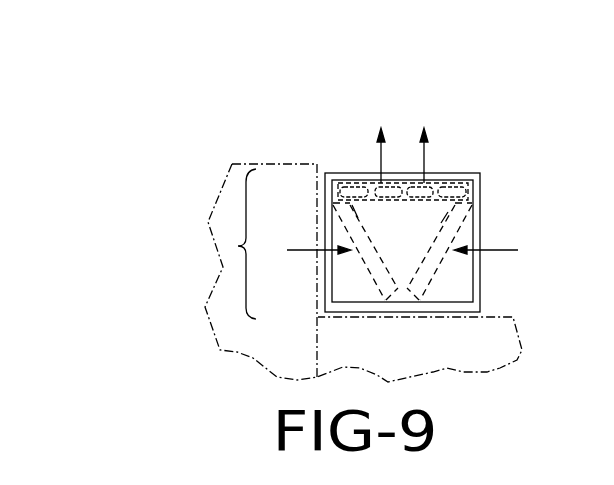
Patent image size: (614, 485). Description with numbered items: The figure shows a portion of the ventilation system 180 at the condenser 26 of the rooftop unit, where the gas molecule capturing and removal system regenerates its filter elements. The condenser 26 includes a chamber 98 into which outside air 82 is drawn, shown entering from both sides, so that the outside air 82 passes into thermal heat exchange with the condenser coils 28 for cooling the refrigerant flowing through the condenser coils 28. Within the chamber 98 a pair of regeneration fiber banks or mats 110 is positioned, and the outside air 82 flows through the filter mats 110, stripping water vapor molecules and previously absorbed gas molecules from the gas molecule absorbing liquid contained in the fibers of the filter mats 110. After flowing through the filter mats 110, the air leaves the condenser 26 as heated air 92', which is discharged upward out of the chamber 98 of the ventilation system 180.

The ventilation system 180 is at (292, 141).
The regeneration fiber mats 110 is at (344, 182).
The heated air 92' is at (403, 138).
The chamber 98 is at (403, 232).
The outside air 82 is at (304, 250).
The condenser coils 28 is at (360, 268).
The condenser 26 is at (238, 246).